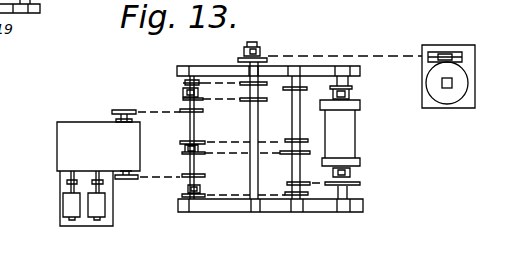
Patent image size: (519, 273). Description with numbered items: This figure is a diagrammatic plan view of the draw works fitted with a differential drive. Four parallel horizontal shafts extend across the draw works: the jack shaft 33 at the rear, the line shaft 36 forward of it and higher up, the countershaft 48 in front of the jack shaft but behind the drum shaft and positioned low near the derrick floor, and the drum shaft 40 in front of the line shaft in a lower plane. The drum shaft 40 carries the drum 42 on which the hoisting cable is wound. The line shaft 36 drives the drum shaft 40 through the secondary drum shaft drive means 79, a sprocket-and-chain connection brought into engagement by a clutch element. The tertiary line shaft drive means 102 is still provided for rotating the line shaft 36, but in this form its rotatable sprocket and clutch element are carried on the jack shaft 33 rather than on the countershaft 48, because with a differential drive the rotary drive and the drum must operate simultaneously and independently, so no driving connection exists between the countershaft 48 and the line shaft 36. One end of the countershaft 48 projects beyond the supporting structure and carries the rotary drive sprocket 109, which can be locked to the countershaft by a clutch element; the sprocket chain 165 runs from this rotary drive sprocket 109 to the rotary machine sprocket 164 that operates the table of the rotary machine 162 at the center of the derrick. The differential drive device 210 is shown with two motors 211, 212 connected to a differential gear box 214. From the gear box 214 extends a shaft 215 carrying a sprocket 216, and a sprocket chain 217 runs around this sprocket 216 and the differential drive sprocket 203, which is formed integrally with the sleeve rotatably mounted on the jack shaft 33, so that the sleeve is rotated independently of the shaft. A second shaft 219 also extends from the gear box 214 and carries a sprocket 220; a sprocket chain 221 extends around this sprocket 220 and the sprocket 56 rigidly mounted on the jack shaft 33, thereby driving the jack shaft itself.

The jack shaft 33 is at (196, 128).
The line shaft 36 is at (292, 117).
The drum shaft 40 is at (343, 82).
The drum 42 is at (354, 131).
The countershaft 48 is at (250, 114).
The sprocket 56 is at (198, 176).
The secondary drum shaft drive means 79 is at (321, 186).
The tertiary line shaft drive means 102 is at (233, 199).
The rotary drive sprocket 109 is at (264, 55).
The rotary machine 162 is at (458, 61).
The rotary machine sprocket 164 is at (445, 38).
The sprocket chain 165 is at (386, 56).
The differential drive sprocket 203 is at (187, 112).
The differential drive device 210 is at (77, 163).
The motor 211 is at (68, 203).
The motor 212 is at (95, 214).
The differential gear box 214 is at (72, 149).
The shaft 215 is at (118, 119).
The sprocket 216 is at (123, 110).
The sprocket chain 217 is at (166, 112).
The shaft 219 is at (127, 171).
The sprocket 220 is at (124, 180).
The sprocket chain 221 is at (176, 174).